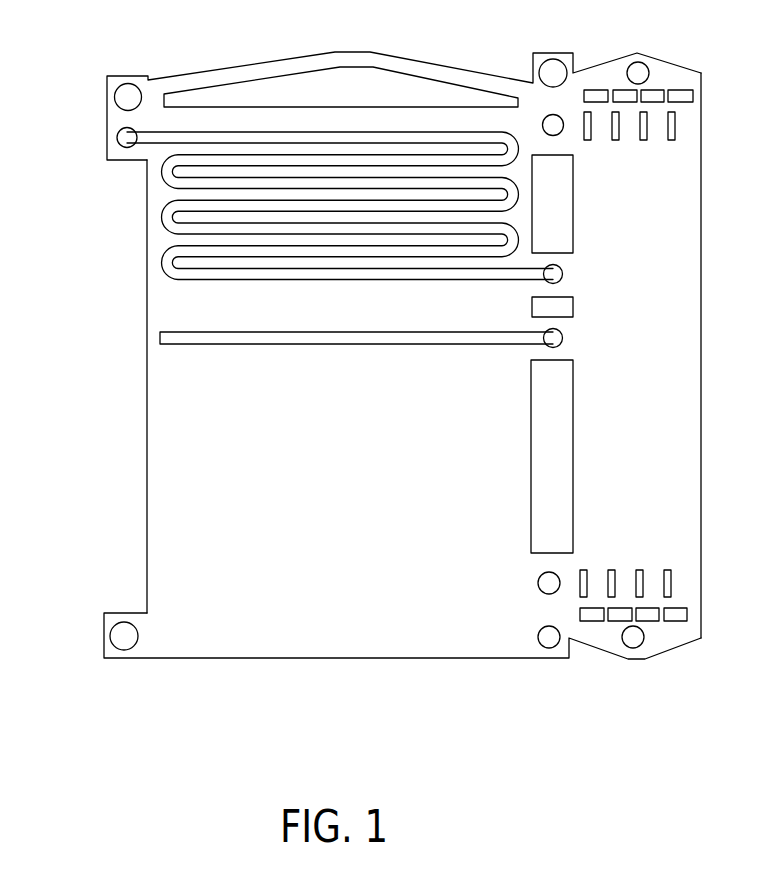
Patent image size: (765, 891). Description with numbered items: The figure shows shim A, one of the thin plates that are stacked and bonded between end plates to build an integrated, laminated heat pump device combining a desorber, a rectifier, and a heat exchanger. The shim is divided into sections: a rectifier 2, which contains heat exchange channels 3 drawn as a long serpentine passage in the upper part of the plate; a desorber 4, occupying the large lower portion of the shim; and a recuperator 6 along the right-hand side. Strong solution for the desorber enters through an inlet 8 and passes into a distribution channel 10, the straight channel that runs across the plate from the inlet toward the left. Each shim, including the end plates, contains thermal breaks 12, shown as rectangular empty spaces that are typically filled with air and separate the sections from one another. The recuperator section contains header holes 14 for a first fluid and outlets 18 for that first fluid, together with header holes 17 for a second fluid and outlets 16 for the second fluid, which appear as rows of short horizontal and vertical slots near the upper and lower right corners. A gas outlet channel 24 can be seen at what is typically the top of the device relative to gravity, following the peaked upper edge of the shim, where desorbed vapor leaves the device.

The rectifier 2 is at (130, 246).
The heat exchange channels 3 is at (177, 173).
The desorber 4 is at (123, 493).
The recuperator 6 is at (710, 277).
The inlet 8 is at (555, 337).
The distribution channel 10 is at (340, 340).
The thermal breaks 12 is at (565, 227).
The header holes for a first fluid 14 is at (652, 95).
The outlets for a second fluid 16 is at (675, 127).
The header holes for a second fluid 17 is at (648, 615).
The outlets for a first fluid 18 is at (578, 582).
The gas outlet channel 24 is at (260, 93).